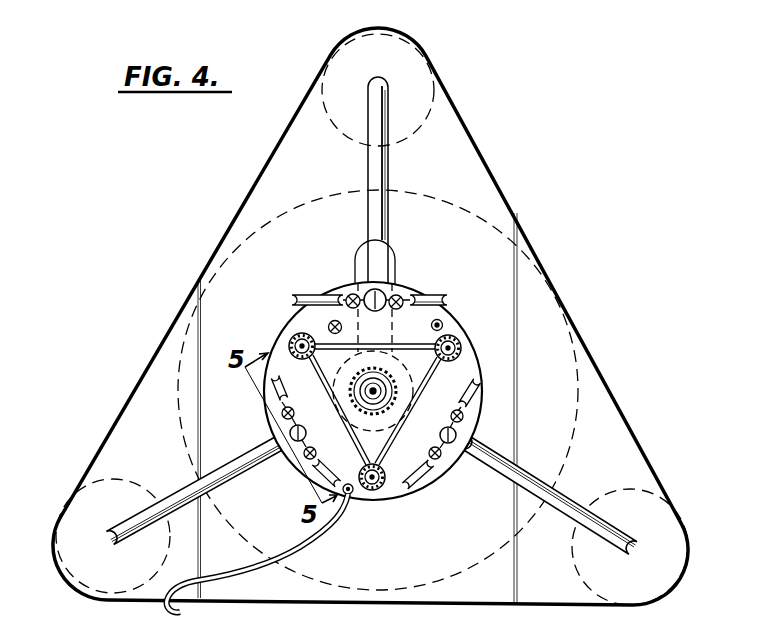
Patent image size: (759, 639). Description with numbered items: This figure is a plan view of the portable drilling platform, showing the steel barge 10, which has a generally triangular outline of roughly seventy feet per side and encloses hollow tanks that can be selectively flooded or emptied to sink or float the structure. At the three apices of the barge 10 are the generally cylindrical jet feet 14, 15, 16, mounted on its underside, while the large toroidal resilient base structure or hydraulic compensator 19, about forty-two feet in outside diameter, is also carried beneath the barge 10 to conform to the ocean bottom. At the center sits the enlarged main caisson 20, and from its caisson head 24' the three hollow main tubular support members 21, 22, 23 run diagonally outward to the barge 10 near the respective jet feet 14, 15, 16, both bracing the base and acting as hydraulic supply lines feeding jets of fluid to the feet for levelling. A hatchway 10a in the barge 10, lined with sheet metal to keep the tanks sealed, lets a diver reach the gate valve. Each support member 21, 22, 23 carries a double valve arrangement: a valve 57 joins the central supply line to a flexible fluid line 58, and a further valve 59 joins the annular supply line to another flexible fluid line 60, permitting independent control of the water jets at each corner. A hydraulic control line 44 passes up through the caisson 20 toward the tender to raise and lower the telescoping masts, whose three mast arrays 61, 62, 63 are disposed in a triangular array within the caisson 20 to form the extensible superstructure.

The steel barge 10 is at (466, 190).
The hatchway 10a is at (388, 267).
The jet foot structure 14 is at (67, 543).
The jet foot structure 15 is at (687, 548).
The jet foot structure 16 is at (432, 95).
The resilient base structure or hydraulic compensator 19 is at (580, 387).
The central caisson 20 is at (415, 284).
The main tubular support member 21 is at (177, 500).
The main tubular support member 22 is at (512, 473).
The main tubular support member 23 is at (373, 182).
The caisson head 24' is at (462, 318).
The hydraulic control line 44 is at (227, 567).
The valve 57 is at (312, 465).
The flexible fluid line 58 is at (343, 490).
The valve 59 is at (284, 415).
The flexible fluid line 60 is at (286, 398).
The mast array 61 is at (290, 346).
The mast array 62 is at (461, 353).
The mast array 63 is at (377, 497).